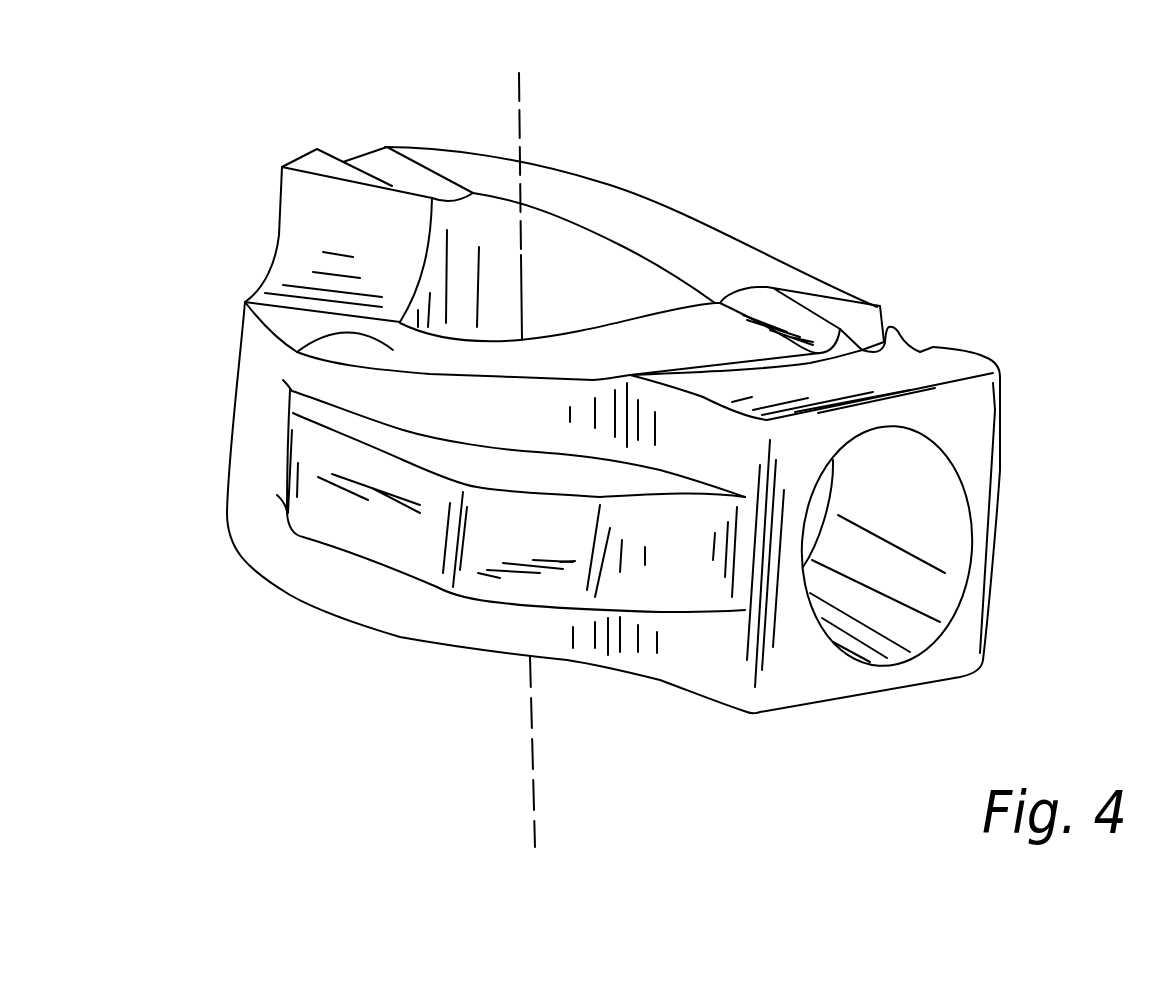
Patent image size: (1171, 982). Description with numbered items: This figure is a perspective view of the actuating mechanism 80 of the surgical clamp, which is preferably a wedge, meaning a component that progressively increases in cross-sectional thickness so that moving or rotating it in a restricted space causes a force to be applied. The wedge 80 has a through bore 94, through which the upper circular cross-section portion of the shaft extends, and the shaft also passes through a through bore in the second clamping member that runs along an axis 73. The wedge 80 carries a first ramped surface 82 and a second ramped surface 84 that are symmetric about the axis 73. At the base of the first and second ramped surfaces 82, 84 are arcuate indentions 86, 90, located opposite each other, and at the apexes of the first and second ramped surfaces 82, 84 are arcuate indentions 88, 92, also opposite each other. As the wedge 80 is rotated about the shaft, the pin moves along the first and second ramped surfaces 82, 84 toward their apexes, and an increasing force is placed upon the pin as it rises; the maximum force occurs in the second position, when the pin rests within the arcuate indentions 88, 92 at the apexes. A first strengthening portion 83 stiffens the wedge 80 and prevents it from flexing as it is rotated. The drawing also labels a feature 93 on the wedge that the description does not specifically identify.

The axis 73 is at (520, 103).
The actuating mechanism 80 is at (477, 717).
The first ramped surface 82 is at (297, 352).
The first strengthening portion 83 is at (383, 543).
The second ramped surface 84 is at (688, 228).
The arcuate indention 86 is at (302, 212).
The arcuate indention 88 is at (915, 347).
The arcuate indention 90 is at (853, 293).
The arcuate indention 92 is at (366, 158).
The bore 93 is at (932, 500).
The through bore 94 is at (573, 260).